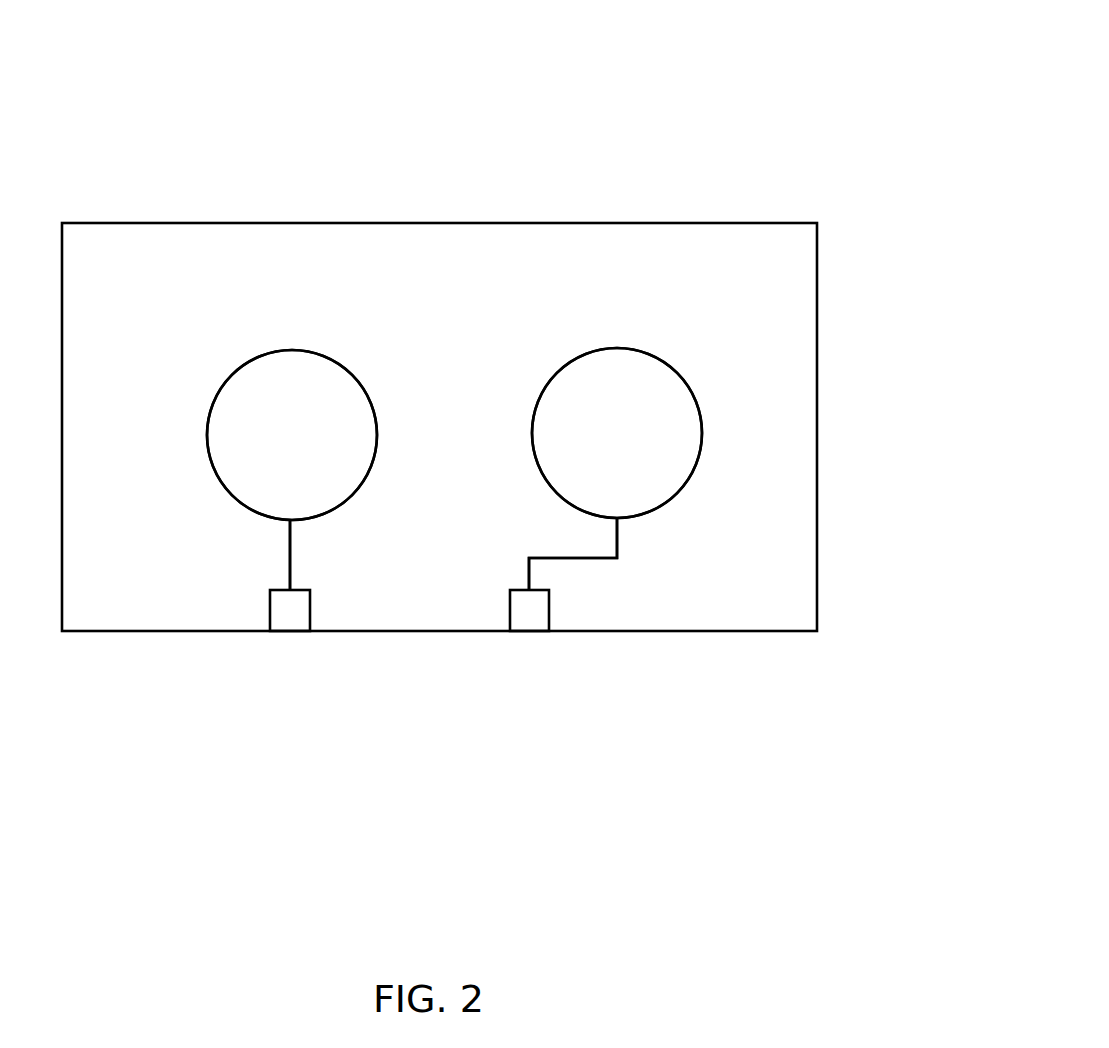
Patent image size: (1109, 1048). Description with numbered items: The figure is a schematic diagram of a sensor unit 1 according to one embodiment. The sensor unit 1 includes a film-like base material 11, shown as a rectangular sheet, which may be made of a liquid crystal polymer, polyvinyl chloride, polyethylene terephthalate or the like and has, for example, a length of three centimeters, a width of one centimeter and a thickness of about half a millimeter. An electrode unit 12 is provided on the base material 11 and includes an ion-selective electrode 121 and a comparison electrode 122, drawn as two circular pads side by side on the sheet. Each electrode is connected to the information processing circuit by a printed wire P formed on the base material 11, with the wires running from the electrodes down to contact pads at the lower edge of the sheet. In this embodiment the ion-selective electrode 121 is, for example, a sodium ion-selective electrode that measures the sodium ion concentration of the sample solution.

The sensor unit 1 is at (790, 132).
The base material 11 is at (617, 223).
The electrode unit 12 is at (407, 337).
The ion-selective electrode 121 is at (227, 377).
The comparison electrode 122 is at (697, 398).
The printed wire P is at (289, 556).